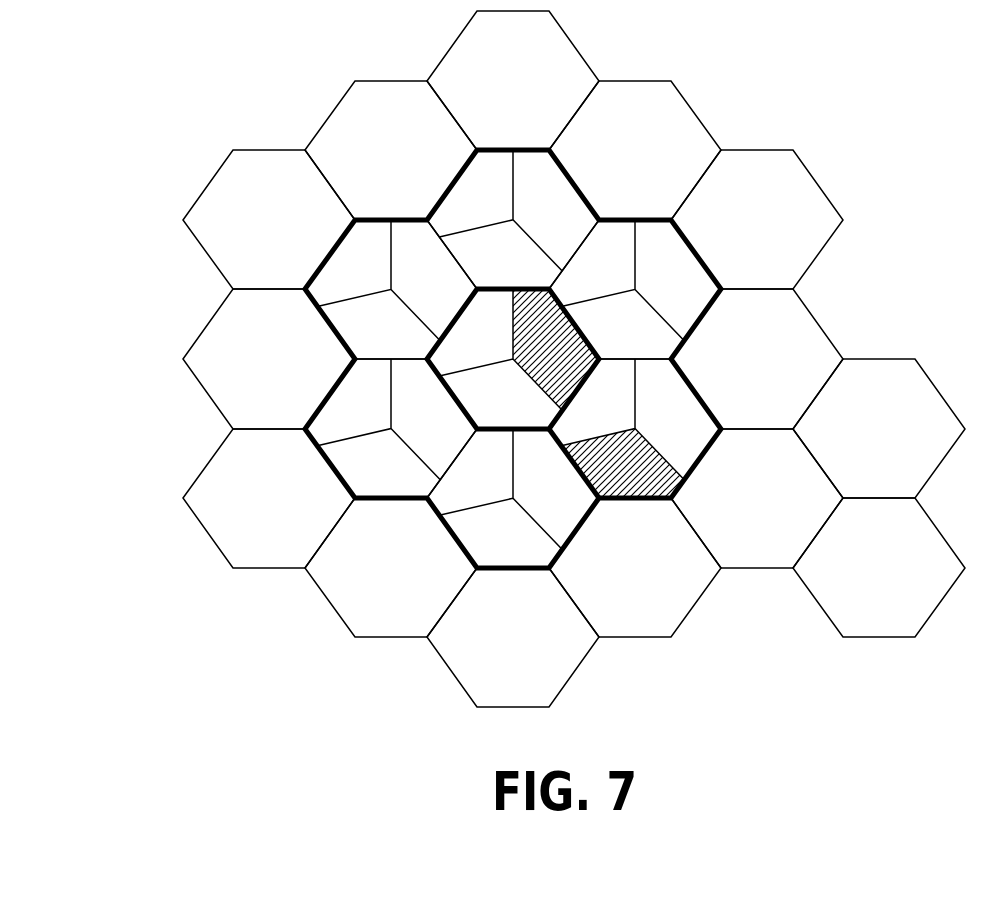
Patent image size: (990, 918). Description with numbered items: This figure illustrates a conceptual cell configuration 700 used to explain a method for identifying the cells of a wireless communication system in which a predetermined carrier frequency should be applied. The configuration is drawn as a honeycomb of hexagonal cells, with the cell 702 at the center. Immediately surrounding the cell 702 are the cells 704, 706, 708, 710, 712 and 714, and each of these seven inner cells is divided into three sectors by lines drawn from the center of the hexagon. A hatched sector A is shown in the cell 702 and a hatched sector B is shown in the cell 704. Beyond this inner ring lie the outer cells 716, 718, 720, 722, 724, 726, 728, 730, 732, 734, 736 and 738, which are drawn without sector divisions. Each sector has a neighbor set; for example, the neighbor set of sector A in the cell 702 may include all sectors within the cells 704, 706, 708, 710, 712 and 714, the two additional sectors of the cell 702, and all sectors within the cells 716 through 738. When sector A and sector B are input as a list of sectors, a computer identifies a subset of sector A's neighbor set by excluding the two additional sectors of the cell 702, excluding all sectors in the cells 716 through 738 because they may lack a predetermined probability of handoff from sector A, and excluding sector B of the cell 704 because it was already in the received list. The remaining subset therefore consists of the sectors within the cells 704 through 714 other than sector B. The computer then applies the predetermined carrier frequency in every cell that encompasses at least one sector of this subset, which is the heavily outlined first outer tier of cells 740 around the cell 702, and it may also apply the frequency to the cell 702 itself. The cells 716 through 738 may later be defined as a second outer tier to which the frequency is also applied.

The cell configuration 700 is at (176, 78).
The cell 702 is at (526, 410).
The cell 704 is at (699, 432).
The cell 706 is at (696, 292).
The cell 708 is at (568, 226).
The cell 710 is at (407, 340).
The cell 712 is at (406, 480).
The cell 714 is at (577, 500).
The cell 716 is at (658, 586).
The cell 718 is at (780, 516).
The cell 720 is at (780, 376).
The cell 722 is at (780, 238).
The cell 724 is at (658, 168).
The cell 726 is at (536, 98).
The cell 728 is at (414, 168).
The cell 730 is at (292, 238).
The cell 732 is at (292, 376).
The cell 734 is at (292, 516).
The cell 736 is at (414, 586).
The cell 738 is at (536, 654).
The first outer tier of cells 740 is at (712, 276).